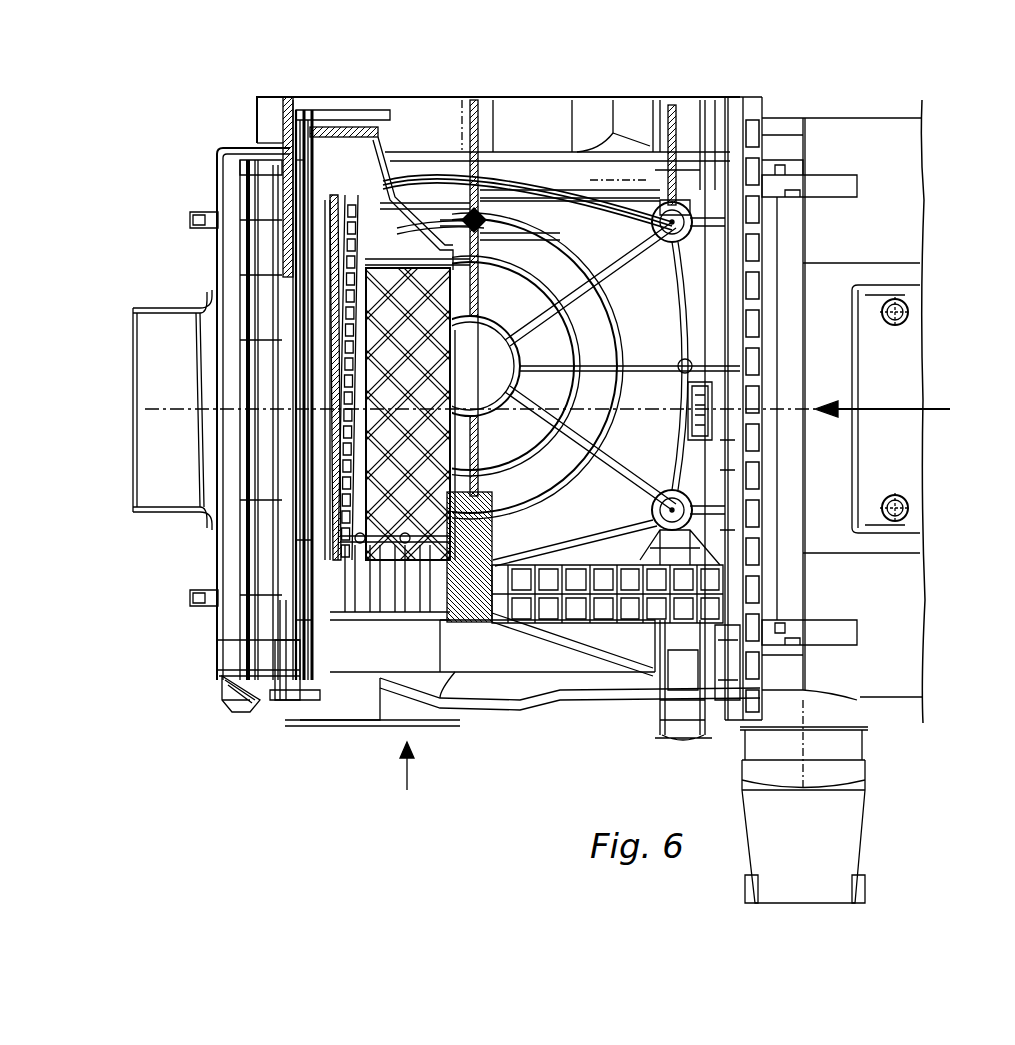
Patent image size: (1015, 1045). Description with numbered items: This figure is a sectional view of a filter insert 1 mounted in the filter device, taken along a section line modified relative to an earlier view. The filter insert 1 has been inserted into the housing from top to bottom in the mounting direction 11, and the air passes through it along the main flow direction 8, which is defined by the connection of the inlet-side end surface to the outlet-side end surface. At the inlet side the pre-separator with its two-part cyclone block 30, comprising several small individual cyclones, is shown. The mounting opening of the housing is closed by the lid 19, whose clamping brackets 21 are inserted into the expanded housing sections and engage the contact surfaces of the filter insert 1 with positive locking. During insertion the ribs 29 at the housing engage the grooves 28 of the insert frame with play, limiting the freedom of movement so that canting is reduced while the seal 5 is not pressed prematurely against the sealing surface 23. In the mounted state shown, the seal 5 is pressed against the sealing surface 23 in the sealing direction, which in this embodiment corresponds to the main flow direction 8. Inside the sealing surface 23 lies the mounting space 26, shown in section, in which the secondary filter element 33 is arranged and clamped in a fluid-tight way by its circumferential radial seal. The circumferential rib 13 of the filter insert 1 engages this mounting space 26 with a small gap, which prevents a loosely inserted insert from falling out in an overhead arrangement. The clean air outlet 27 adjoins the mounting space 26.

The filter insert 1 is at (300, 540).
The seal 5 is at (292, 160).
The main flow direction 8 is at (903, 410).
The mounting direction 11 is at (410, 775).
The circumferential rib 13 is at (283, 705).
The lid 19 is at (482, 712).
The clamping brackets 21 is at (375, 565).
The sealing surface 23 is at (300, 112).
The mounting space 26 is at (232, 705).
The clean air outlet 27 is at (160, 512).
The grooves 28 is at (325, 313).
The ribs 29 is at (340, 178).
The cyclone block 30 is at (903, 215).
The secondary filter element 33 is at (255, 220).